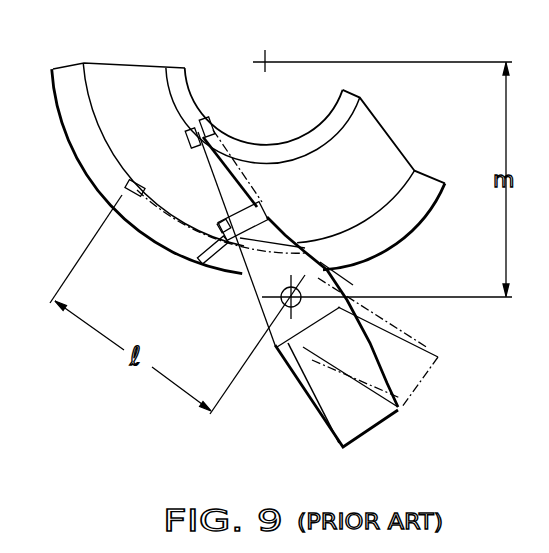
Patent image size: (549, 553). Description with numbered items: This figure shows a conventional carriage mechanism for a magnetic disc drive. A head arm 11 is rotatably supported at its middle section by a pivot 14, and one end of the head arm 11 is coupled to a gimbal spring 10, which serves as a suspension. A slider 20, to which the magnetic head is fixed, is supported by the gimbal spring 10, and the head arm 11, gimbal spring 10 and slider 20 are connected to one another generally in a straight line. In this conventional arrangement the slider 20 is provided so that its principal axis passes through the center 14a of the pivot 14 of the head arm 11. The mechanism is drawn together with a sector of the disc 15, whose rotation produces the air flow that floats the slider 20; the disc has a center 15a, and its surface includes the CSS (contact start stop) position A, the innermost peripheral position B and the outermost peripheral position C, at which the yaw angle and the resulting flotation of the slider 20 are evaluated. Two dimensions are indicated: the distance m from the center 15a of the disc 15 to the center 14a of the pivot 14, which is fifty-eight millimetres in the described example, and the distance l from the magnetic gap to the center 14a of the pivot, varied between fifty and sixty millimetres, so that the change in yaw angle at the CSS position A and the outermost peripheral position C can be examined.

The gimbal spring 10 is at (215, 175).
The head arm 11 is at (267, 340).
The pivot 14 is at (282, 291).
The center of pivot 14a is at (283, 301).
The disc 15 is at (418, 207).
The center of disc 15a is at (268, 52).
The slider 20 is at (188, 136).
The CSS position A is at (350, 105).
The innermost peripheral position B is at (328, 140).
The outermost peripheral position C is at (374, 208).